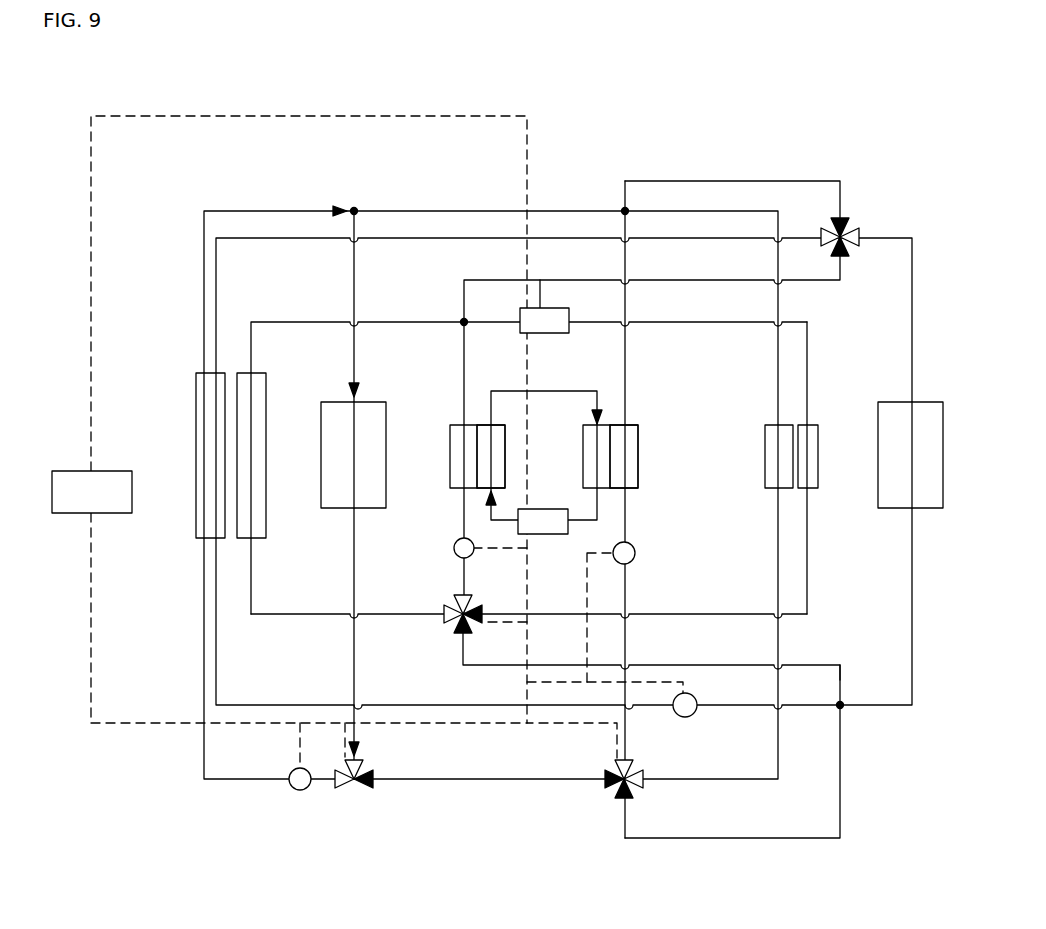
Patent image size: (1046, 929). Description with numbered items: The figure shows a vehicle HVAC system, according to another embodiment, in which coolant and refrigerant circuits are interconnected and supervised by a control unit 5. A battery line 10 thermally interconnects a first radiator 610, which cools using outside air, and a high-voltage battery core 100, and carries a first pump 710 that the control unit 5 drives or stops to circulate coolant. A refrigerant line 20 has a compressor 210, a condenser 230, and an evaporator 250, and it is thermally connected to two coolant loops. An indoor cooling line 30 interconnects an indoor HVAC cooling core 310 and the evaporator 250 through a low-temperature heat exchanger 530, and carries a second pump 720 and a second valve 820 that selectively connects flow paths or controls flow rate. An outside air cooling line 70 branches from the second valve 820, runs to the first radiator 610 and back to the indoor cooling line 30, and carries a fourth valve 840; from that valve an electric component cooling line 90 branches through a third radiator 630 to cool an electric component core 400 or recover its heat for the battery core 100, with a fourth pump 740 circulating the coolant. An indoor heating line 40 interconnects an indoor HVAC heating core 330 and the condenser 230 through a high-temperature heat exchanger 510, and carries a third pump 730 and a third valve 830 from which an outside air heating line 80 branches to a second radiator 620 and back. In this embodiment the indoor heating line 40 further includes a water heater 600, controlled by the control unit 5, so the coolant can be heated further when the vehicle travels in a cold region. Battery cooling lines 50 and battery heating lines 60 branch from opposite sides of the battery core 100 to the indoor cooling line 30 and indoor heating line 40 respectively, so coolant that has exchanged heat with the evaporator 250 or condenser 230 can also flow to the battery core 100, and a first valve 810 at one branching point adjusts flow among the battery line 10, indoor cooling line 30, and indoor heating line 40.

The control unit 5 is at (113, 471).
The battery line 10 is at (912, 312).
The refrigerant line 20 is at (548, 391).
The indoor cooling line 30 is at (625, 640).
The indoor heating line 40 is at (808, 350).
The battery cooling lines 50 is at (712, 181).
The battery heating lines 60 is at (488, 280).
The outside air cooling line 70 is at (222, 792).
The outside air heating line 80 is at (292, 322).
The electric component cooling line 90 is at (354, 285).
The high-voltage battery core 100 is at (933, 510).
The compressor 210 is at (553, 534).
The condenser 230 is at (493, 425).
The evaporator 250 is at (600, 468).
The indoor HVAC cooling core 310 is at (765, 425).
The indoor HVAC heating core 330 is at (818, 488).
The electric component core 400 is at (320, 402).
The high-temperature heat exchanger 510 is at (450, 425).
The low-temperature heat exchanger 530 is at (635, 438).
The water heater 600 is at (540, 280).
The first radiator 610 is at (200, 540).
The second radiator 620 is at (265, 540).
The third radiator 630 is at (196, 372).
The first pump 710 is at (688, 718).
The second pump 720 is at (636, 553).
The third pump 730 is at (452, 548).
The fourth pump 740 is at (297, 792).
The first valve 810 is at (850, 222).
The second valve 820 is at (598, 790).
The third valve 830 is at (455, 625).
The fourth valve 840 is at (360, 790).